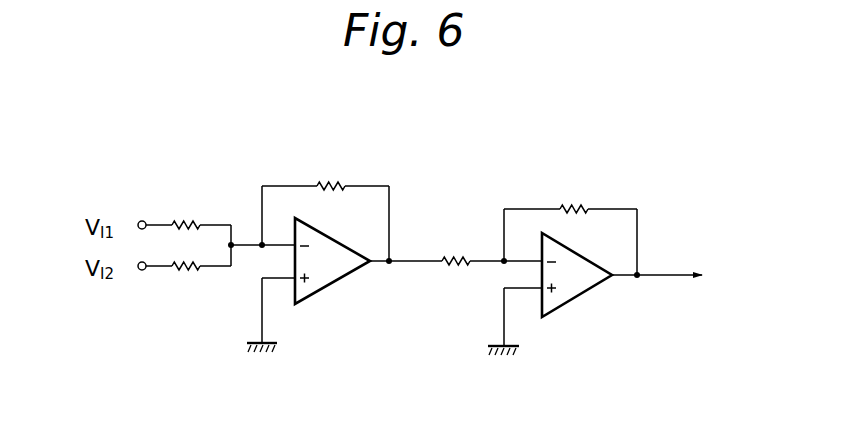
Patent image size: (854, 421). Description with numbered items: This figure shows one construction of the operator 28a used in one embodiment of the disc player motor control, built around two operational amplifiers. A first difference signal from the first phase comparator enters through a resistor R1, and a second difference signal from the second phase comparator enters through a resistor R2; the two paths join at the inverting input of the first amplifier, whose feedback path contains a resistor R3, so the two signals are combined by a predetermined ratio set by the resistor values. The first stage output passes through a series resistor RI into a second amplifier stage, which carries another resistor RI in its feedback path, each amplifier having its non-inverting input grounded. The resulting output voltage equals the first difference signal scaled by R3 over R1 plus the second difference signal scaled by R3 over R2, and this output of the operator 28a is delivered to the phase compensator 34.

The operator 28a is at (443, 227).
The phase compensator 34 is at (689, 268).
The resistor R1 is at (193, 217).
The resistor R2 is at (186, 277).
The resistor R3 is at (331, 180).
The resistor RI is at (459, 255).